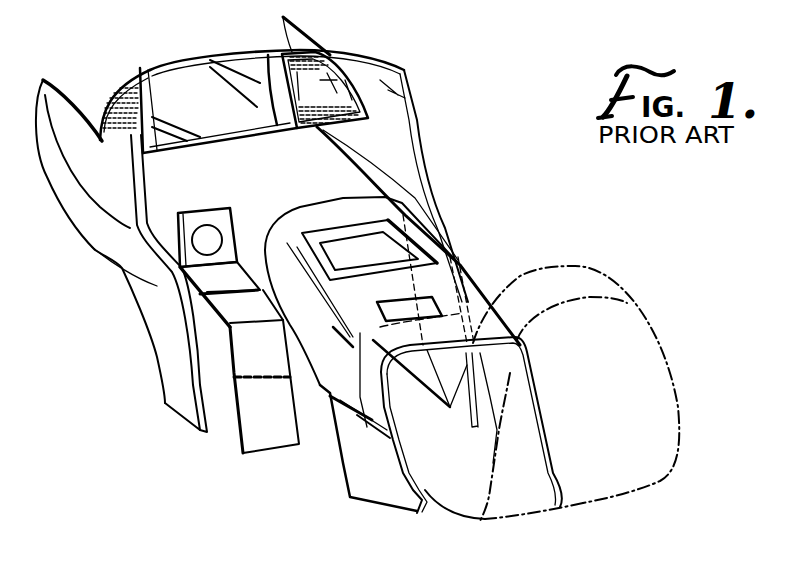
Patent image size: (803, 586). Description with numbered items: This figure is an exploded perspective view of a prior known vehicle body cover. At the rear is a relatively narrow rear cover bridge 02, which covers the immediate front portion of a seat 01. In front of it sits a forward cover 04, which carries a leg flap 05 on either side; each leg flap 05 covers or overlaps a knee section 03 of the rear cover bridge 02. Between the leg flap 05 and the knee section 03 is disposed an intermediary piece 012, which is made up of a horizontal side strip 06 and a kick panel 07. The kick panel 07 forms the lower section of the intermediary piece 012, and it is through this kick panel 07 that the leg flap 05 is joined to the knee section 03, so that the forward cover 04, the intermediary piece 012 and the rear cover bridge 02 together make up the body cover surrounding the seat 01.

The seat 01 is at (557, 267).
The rear cover bridge 02 is at (467, 282).
The knee section 03 is at (353, 430).
The forward cover 04 is at (103, 227).
The leg flap 05 is at (160, 343).
The horizontal side strip 06 is at (226, 300).
The kick panel 07 is at (251, 403).
The intermediary piece 012 is at (247, 285).